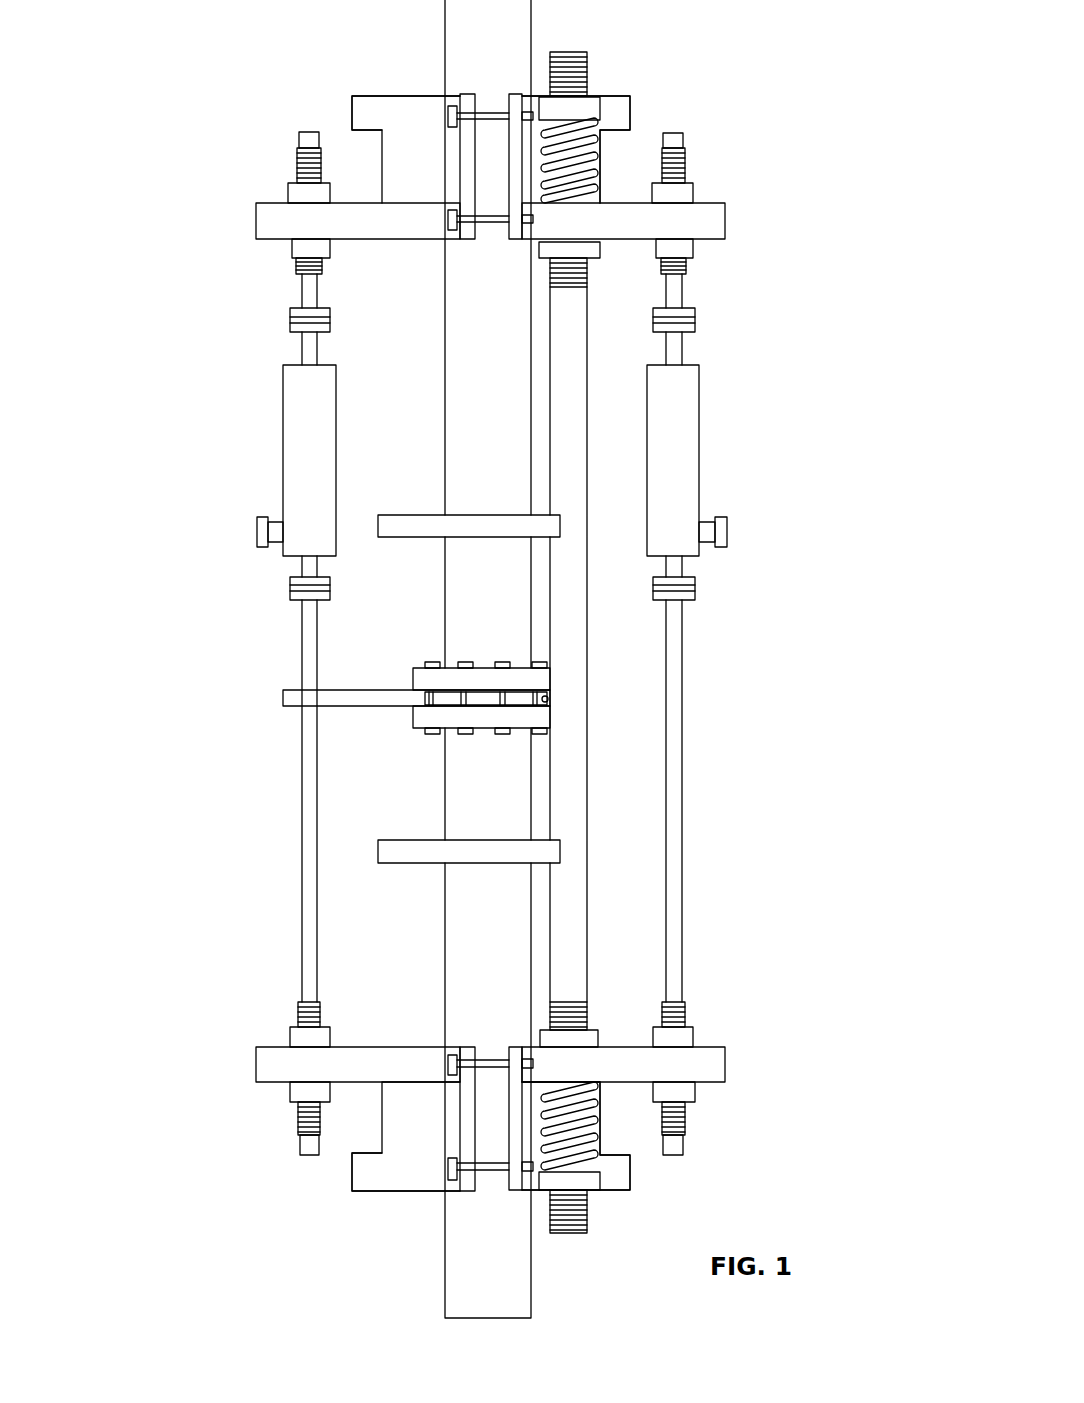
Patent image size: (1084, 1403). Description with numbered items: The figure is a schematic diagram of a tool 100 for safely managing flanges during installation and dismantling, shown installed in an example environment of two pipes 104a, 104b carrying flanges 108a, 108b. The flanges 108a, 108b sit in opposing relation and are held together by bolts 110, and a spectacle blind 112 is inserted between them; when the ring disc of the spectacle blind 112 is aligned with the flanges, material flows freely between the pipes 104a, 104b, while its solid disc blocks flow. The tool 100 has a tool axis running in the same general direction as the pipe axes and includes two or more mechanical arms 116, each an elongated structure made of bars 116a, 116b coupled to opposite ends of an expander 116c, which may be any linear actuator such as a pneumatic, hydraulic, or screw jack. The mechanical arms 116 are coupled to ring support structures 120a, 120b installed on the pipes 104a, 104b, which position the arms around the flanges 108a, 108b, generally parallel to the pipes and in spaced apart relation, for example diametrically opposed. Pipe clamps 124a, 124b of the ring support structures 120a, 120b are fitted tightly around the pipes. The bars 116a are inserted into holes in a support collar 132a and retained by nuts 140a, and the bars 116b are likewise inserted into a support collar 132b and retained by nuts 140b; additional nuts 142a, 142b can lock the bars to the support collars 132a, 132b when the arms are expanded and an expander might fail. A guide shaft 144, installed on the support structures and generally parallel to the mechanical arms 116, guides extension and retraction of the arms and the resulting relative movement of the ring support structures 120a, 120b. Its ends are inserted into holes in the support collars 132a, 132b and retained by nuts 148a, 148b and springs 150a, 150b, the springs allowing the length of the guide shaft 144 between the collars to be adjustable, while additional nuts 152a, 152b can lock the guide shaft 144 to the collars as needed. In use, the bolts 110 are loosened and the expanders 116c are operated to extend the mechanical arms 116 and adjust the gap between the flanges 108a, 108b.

The tool 100 is at (278, 632).
The pipe 104a is at (533, 25).
The pipe 104b is at (533, 1263).
The flange 108a is at (542, 680).
The flange 108b is at (543, 717).
The bolts 110 is at (540, 665).
The spectacle blind 112 is at (533, 698).
The mechanical arms 116 is at (300, 787).
The bar 116a is at (302, 293).
The bar 116b is at (300, 859).
The expander 116c is at (283, 442).
The ring support structure 120a is at (352, 112).
The ring support structure 120b is at (352, 1173).
The pipe clamp 124a is at (385, 96).
The pipe clamp 124b is at (400, 1192).
The support collar 132a is at (725, 220).
The support collar 132b is at (725, 1063).
The nuts 140a is at (288, 193).
The nuts 140b is at (290, 1092).
The nuts 142a is at (292, 247).
The nuts 142b is at (290, 1040).
The guide shaft 144 is at (570, 890).
The nut 148a is at (587, 108).
The nut 148b is at (590, 1177).
The spring 150a is at (600, 163).
The spring 150b is at (600, 1131).
The nut 152a is at (600, 247).
The nut 152b is at (598, 1038).